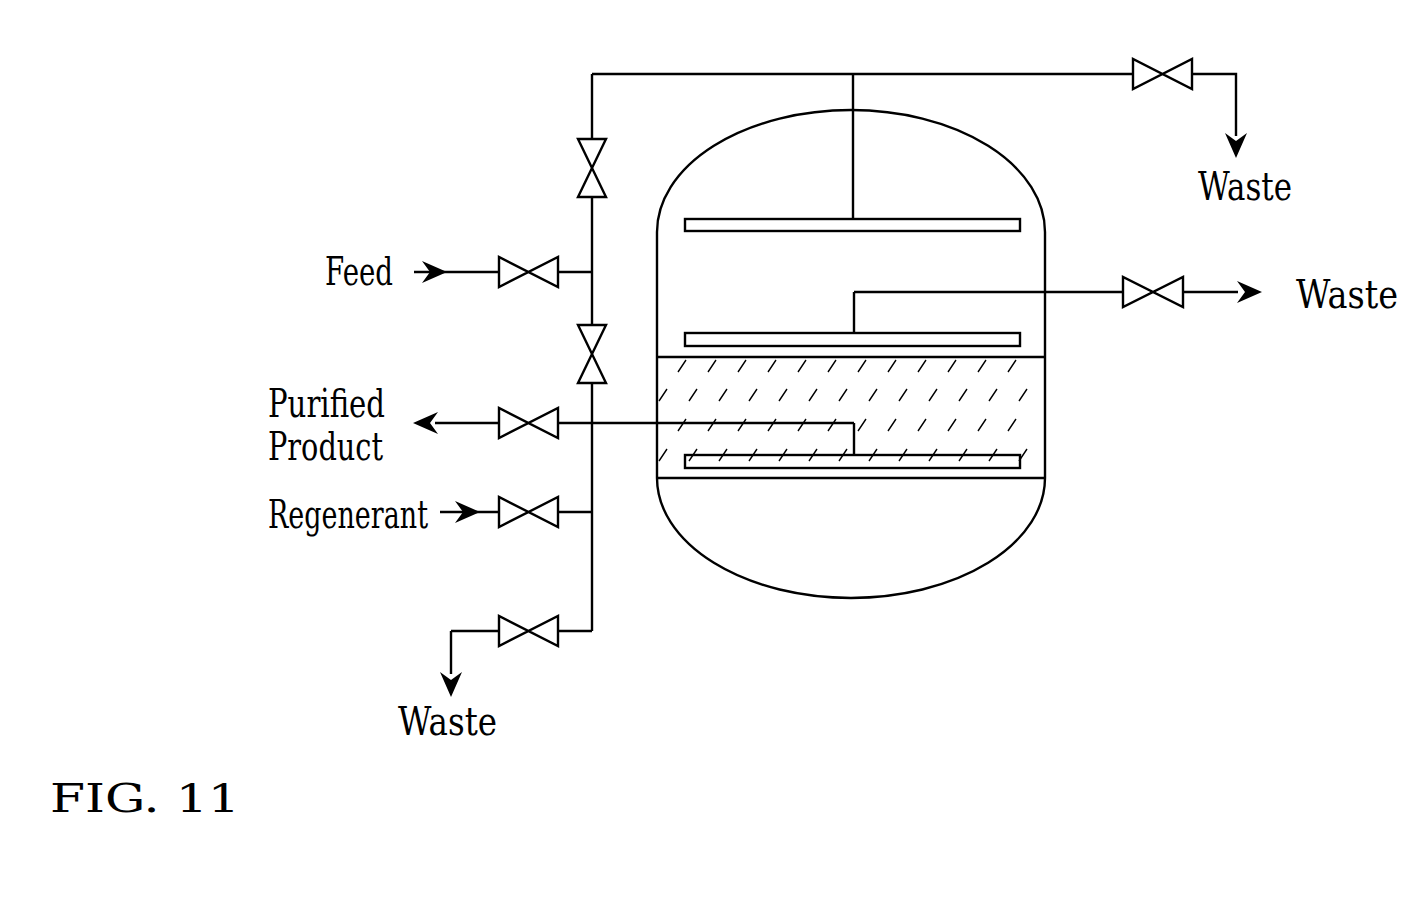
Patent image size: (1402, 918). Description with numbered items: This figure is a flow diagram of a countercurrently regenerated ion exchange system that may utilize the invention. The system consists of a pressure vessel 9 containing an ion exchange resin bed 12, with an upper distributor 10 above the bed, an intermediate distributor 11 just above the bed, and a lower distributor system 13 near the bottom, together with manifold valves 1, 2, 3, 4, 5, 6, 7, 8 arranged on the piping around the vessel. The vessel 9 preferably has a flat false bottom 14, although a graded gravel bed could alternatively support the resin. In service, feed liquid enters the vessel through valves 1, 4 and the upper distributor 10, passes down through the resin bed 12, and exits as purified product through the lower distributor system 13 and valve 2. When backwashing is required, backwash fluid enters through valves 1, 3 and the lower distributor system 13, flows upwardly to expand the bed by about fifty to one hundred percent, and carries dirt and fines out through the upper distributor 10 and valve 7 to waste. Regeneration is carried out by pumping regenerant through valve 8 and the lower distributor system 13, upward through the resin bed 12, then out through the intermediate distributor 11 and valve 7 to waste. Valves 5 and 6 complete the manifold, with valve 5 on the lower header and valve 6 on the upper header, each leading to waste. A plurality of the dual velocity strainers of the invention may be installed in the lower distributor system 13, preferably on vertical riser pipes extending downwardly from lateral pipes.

The manifold valve 1 is at (522, 243).
The manifold valve 2 is at (520, 399).
The manifold valve 3 is at (605, 354).
The manifold valve 4 is at (607, 168).
The manifold valve 5 is at (528, 659).
The manifold valve 6 is at (1162, 97).
The manifold valve 7 is at (1153, 318).
The manifold valve 8 is at (528, 543).
The pressure vessel 9 is at (1045, 232).
The upper distributor 10 is at (905, 220).
The intermediate distributor 11 is at (812, 333).
The ion exchange resin bed 12 is at (1003, 400).
The lower distributor system 13 is at (917, 468).
The flat false bottom 14 is at (843, 478).